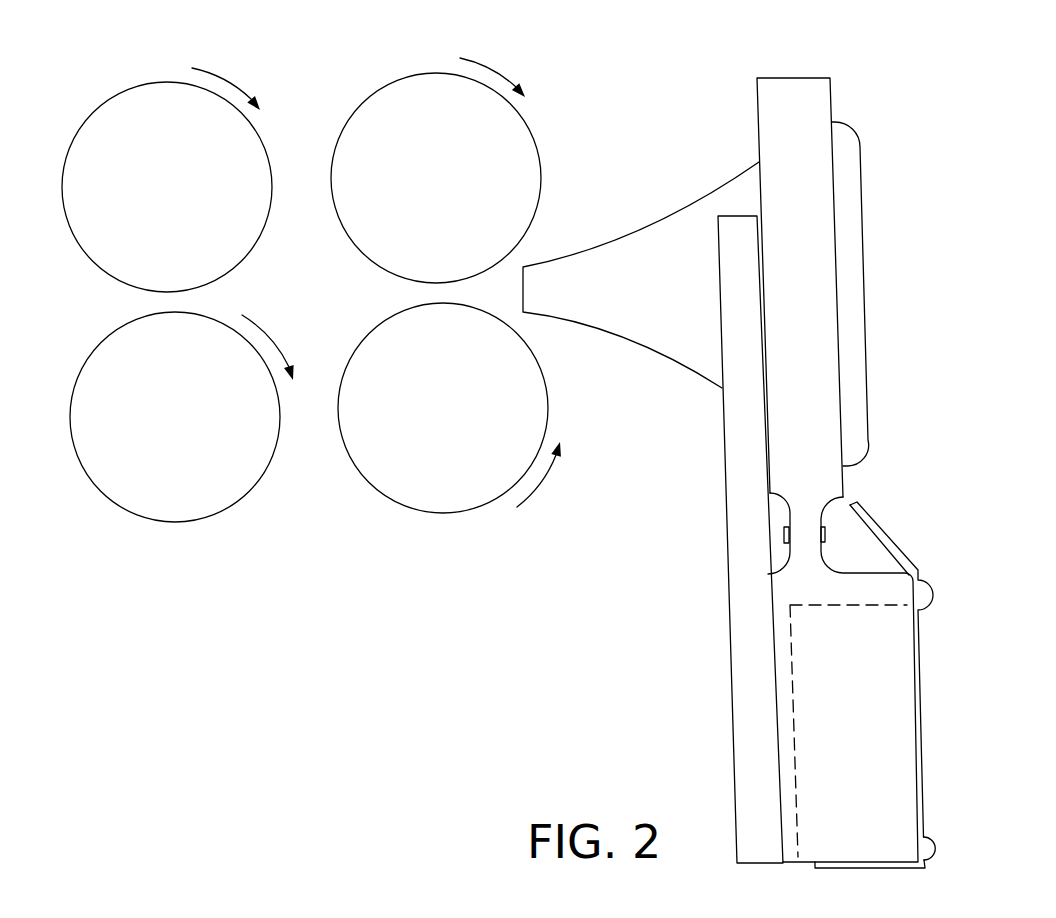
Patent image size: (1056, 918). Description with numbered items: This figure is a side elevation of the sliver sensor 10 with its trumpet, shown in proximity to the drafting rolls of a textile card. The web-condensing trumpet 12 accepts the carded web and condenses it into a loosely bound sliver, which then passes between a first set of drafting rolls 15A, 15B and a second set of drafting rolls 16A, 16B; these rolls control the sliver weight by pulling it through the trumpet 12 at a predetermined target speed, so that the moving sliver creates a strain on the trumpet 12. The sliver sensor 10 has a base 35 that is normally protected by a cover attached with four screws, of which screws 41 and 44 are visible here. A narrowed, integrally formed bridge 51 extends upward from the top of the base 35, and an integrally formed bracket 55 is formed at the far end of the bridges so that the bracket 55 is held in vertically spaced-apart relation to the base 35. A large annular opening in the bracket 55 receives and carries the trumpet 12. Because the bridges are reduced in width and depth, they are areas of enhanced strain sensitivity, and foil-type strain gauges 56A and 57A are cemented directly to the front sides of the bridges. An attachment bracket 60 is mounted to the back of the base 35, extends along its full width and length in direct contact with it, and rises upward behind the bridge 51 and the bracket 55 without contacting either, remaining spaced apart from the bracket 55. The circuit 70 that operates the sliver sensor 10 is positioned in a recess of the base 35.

The sliver sensor 10 is at (957, 82).
The web-condensing trumpet 12 is at (675, 248).
The first drafting roll 15A is at (415, 106).
The first drafting roll 15B is at (436, 500).
The second drafting roll 16A is at (139, 110).
The second drafting roll 16B is at (185, 497).
The base 35 is at (882, 777).
The screw 41 is at (930, 594).
The screw 44 is at (935, 848).
The bridge 51 is at (804, 532).
The bracket 55 is at (806, 105).
The strain gauge 56A is at (828, 549).
The strain gauge 57A is at (785, 541).
The attachment bracket 60 is at (747, 712).
The circuit 70 is at (890, 655).